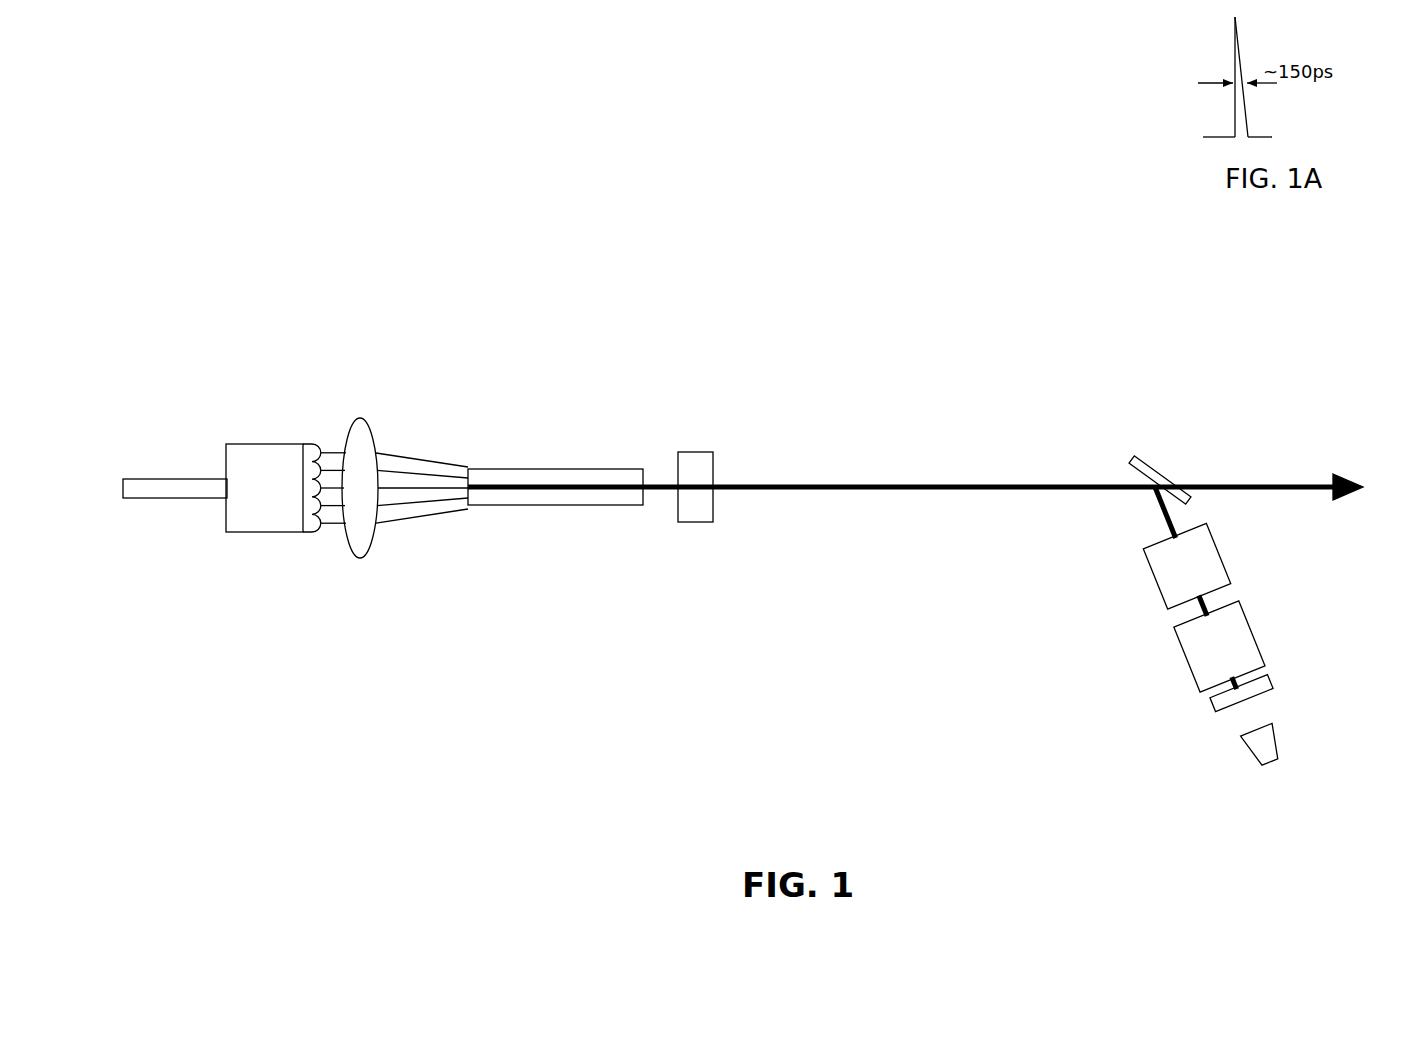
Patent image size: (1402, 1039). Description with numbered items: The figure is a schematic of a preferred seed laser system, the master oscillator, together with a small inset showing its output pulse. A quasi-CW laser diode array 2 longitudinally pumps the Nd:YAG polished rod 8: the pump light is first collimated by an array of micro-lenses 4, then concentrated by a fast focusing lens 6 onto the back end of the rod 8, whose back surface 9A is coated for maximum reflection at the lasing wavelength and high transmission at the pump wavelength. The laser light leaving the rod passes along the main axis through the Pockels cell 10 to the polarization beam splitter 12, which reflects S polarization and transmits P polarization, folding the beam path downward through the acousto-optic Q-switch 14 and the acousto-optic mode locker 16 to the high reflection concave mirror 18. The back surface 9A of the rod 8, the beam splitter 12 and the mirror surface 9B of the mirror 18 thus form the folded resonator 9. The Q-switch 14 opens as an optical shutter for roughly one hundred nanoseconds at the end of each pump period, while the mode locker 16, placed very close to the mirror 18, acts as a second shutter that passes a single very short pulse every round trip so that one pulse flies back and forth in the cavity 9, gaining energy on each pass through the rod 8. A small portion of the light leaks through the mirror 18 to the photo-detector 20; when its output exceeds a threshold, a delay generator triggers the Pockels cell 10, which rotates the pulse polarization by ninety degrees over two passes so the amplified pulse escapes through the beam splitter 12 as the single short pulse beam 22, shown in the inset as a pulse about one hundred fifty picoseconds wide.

The laser diode array 2 is at (268, 445).
The array of micro-lenses 4 is at (312, 531).
The fast focusing lens 6 is at (373, 428).
The Nd:YAG polished rod 8 is at (538, 505).
The folded resonator 9 is at (778, 688).
The back surface of Nd:YAG rod 9A is at (470, 453).
The mirror surface 9B is at (1203, 702).
The Pockels cell 10 is at (705, 452).
The polarization beam splitter 12 is at (1132, 457).
The acousto-optic Q-switch 14 is at (1155, 582).
The acousto-optic mode locker 16 is at (1188, 657).
The high reflection concave mirror 18 is at (1278, 685).
The photo-detector 20 is at (1248, 747).
The single short pulse beam 22 is at (1317, 502).